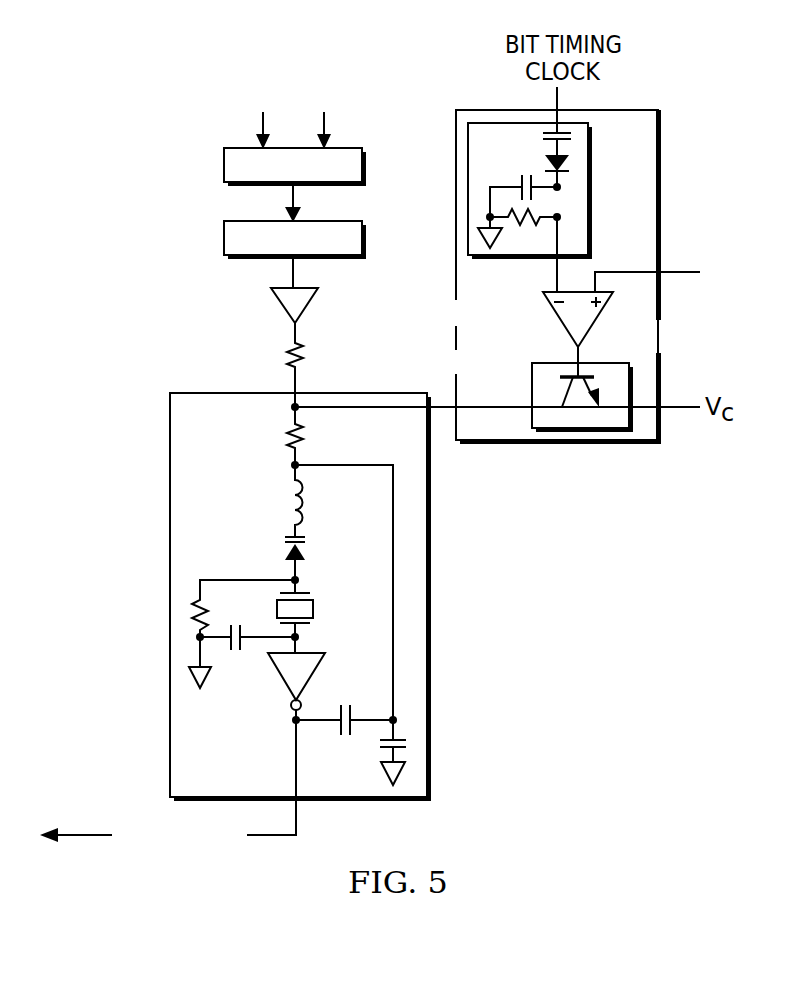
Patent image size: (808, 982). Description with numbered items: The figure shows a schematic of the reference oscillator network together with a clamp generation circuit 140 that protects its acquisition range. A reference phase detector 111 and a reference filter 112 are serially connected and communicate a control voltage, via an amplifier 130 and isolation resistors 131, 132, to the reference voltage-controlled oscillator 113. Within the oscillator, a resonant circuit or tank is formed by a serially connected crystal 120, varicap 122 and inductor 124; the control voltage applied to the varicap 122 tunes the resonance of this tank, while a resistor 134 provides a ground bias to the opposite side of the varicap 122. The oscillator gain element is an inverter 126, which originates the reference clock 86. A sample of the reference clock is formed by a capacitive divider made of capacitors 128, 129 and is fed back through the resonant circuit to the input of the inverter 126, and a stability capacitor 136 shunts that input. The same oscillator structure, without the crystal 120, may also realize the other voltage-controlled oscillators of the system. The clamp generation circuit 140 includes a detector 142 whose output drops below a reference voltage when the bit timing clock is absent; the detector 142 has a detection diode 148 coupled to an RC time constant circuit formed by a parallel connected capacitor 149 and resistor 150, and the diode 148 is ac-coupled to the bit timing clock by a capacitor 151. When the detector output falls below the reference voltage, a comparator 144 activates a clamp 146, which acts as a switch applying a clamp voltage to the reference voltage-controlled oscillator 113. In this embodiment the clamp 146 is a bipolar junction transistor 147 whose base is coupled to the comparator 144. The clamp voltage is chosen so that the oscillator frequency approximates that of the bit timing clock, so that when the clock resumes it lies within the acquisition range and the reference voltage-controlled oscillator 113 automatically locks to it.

The reference phase detector 111 is at (224, 163).
The reference filter 112 is at (224, 235).
The amplifier 130 is at (280, 296).
The isolation resistor 131 is at (287, 357).
The isolation resistor 132 is at (286, 446).
The reference voltage-controlled oscillator 113 is at (152, 489).
The inductor 124 is at (292, 502).
The varicap 122 is at (308, 553).
The crystal 120 is at (314, 609).
The resistor 134 is at (204, 630).
The stability capacitor 136 is at (262, 648).
The inverter 126 is at (320, 667).
The capacitor 128 is at (348, 713).
The capacitor 129 is at (380, 747).
The reference clock 86 is at (168, 806).
The clamp generation circuit 140 is at (678, 158).
The detector 142 is at (468, 144).
The capacitor 151 is at (574, 133).
The detection diode 148 is at (576, 168).
The capacitor 149 is at (521, 179).
The resistor 150 is at (533, 228).
The comparator 144 is at (556, 313).
The clamp 146 is at (542, 364).
The bipolar junction transistor 147 is at (600, 391).